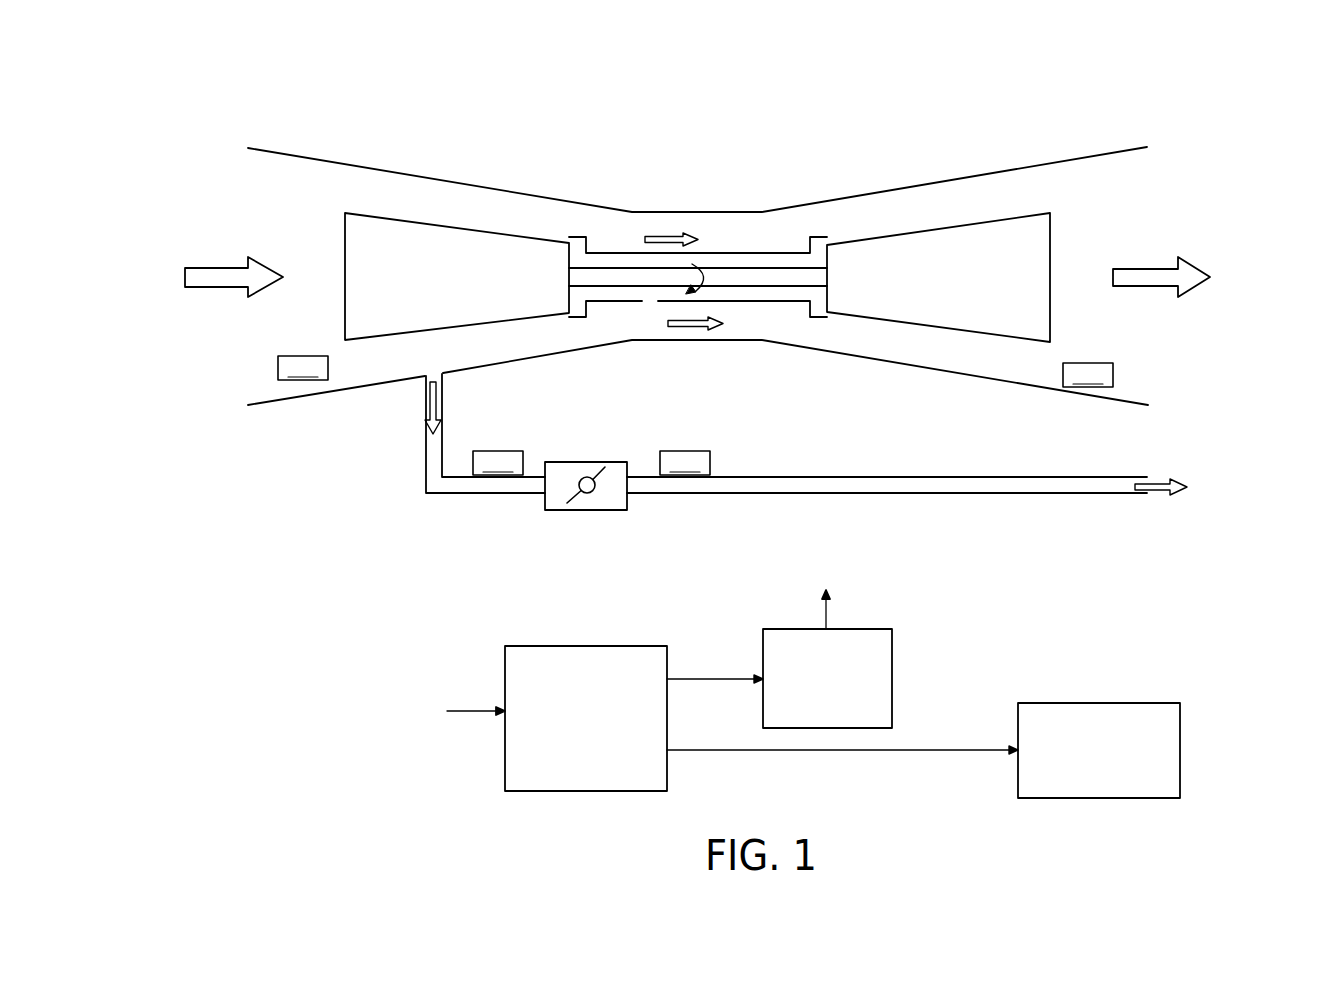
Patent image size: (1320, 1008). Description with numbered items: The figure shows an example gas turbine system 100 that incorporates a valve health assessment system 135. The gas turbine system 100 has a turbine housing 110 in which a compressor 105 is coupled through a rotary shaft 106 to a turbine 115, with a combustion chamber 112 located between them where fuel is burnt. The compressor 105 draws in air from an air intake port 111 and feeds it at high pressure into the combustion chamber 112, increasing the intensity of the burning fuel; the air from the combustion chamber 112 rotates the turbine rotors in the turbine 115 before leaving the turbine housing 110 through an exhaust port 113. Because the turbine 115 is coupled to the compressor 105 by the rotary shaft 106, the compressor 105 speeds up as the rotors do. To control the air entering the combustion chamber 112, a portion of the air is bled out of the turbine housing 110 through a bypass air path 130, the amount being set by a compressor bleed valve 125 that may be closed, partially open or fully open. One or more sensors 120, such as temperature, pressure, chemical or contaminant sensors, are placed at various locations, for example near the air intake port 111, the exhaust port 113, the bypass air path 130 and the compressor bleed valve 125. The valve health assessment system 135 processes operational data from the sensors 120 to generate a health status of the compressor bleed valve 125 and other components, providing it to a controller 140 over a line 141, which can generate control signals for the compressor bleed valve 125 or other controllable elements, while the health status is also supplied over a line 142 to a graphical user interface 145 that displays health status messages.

The gas turbine system 100 is at (489, 78).
The compressor 105 is at (401, 255).
The rotary shaft 106 is at (652, 287).
The turbine housing 110 is at (526, 193).
The air intake port 111 is at (226, 245).
The combustion chamber 112 is at (753, 246).
The exhaust port 113 is at (1188, 242).
The turbine 115 is at (1018, 258).
The sensors 120 is at (695, 415).
The compressor bleed valve 125 is at (583, 462).
The bypass air path 130 is at (882, 476).
The valve health assessment system 135 is at (659, 671).
The controller 140 is at (876, 656).
The line 141 is at (693, 677).
The line 142 is at (723, 752).
The graphical user interface 145 is at (1171, 728).